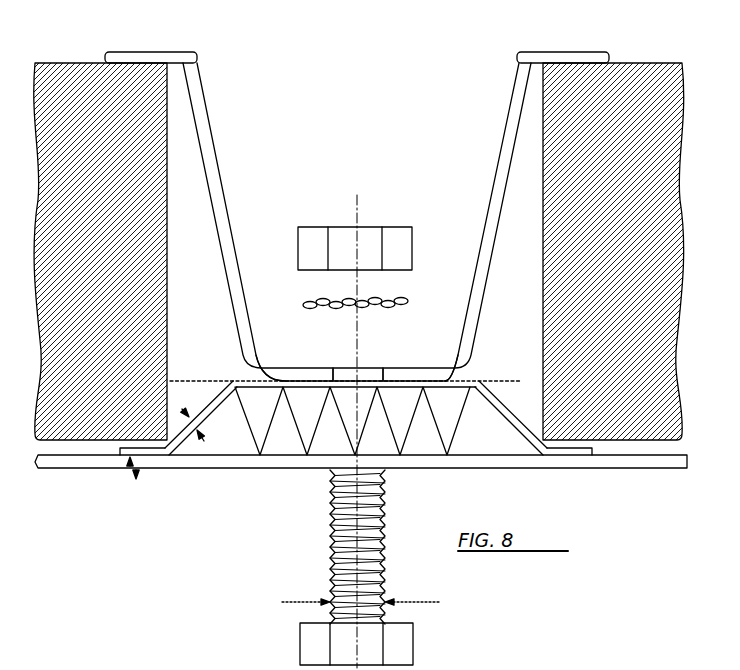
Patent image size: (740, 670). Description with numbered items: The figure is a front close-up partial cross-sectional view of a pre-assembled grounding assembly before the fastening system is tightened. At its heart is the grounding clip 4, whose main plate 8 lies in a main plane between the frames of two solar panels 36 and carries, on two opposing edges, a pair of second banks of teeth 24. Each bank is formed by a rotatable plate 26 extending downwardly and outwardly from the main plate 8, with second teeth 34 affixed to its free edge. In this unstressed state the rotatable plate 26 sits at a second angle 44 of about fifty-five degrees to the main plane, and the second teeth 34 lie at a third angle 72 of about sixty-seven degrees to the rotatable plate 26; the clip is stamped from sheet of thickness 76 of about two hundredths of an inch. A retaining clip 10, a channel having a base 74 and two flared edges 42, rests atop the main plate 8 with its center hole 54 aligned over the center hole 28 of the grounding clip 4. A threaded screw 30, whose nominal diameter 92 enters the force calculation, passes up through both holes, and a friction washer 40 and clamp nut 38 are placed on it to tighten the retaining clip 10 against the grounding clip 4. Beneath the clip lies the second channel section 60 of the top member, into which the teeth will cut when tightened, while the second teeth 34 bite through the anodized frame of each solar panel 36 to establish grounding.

The grounding clip 4 is at (230, 362).
The main plate 8 is at (427, 376).
The retaining clip 10 is at (209, 126).
The pair of second banks of teeth 24 is at (239, 438).
The rotatable plate 26 is at (188, 432).
The center hole of the grounding clip 28 is at (333, 378).
The threaded screw 30 is at (330, 556).
The second teeth 34 is at (120, 454).
The solar panel 36 is at (168, 283).
The clamp nut 38 is at (378, 227).
The friction washer 40 is at (303, 303).
The flared edges 42 is at (146, 52).
The second angle in unstressed condition 44 is at (191, 398).
The center hole of the retaining clip 54 is at (362, 380).
The second channel section 60 is at (672, 454).
The third angle in unstressed condition 72 is at (130, 472).
The base 74 is at (393, 380).
The thickness 76 is at (204, 442).
The nominal diameter of bolt 92 is at (401, 601).